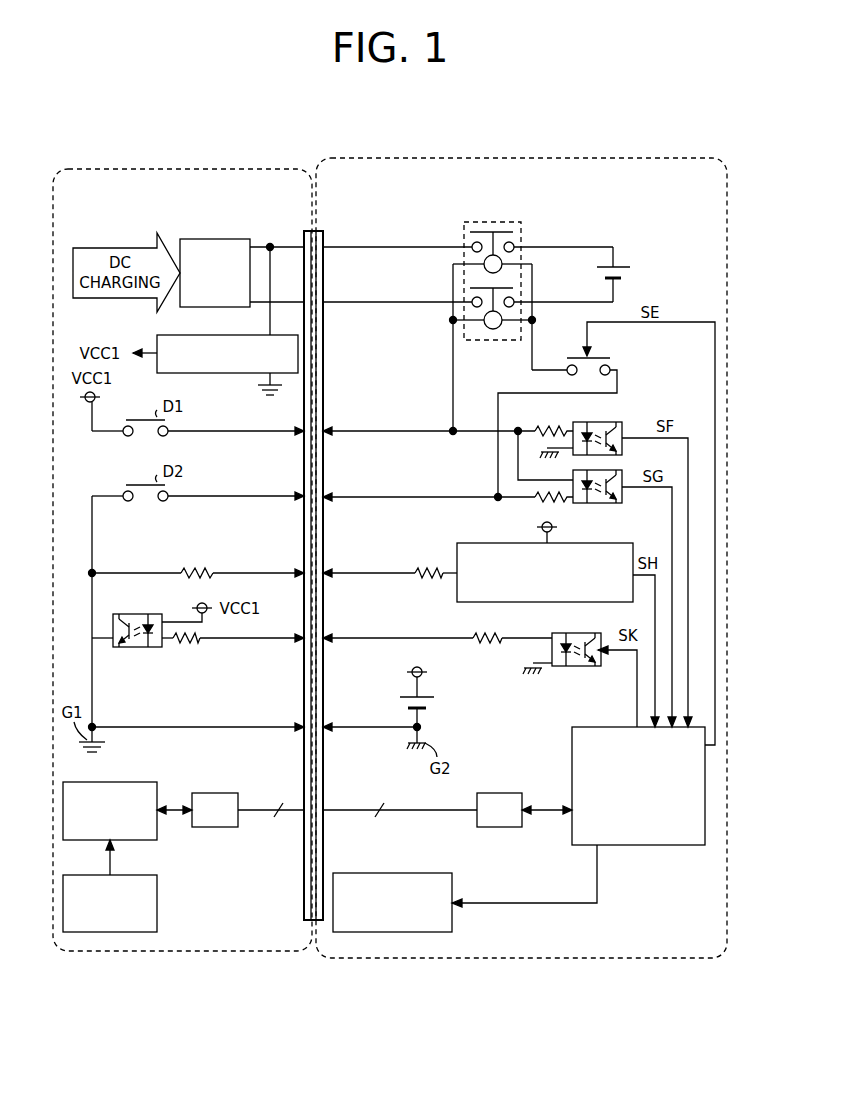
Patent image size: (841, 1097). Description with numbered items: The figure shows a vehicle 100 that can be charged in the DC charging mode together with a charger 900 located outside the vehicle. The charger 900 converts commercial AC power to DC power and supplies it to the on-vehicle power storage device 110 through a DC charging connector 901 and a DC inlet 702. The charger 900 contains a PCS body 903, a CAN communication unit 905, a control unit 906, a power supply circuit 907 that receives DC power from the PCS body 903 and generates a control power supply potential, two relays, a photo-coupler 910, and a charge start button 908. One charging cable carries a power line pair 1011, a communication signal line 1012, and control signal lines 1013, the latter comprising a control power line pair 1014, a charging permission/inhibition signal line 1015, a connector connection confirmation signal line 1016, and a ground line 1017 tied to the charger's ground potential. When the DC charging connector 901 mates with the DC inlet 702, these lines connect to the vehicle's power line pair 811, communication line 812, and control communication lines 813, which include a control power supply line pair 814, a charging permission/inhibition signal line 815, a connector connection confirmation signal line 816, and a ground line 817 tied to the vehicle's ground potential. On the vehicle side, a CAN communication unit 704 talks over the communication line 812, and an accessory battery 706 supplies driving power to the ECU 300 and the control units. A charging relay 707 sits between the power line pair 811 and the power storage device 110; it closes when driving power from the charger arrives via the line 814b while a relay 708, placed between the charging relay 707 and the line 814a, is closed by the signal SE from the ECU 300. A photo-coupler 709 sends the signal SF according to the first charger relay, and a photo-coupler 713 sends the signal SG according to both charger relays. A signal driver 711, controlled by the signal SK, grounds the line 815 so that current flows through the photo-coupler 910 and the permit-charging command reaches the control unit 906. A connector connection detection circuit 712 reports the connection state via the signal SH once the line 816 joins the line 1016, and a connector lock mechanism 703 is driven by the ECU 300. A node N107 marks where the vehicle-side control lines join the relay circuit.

The vehicle 100 is at (516, 160).
The charger 900 is at (192, 171).
The power storage device 110 is at (624, 268).
The ECU 300 is at (599, 727).
The DC inlet 702 is at (318, 230).
The connector lock mechanism 703 is at (383, 873).
The CAN communication unit 704 is at (504, 793).
The accessory battery 706 is at (432, 704).
The charging relay 707 is at (503, 222).
The relay 708 is at (599, 357).
The photo-coupler 709 is at (617, 422).
The signal driver 711 is at (569, 633).
The connector connection detection circuit 712 is at (504, 543).
The photo-coupler 713 is at (620, 506).
The power line pair 811 is at (372, 306).
The communication line 812 is at (445, 810).
The control communication lines 813 is at (340, 726).
The control power supply line pair 814 is at (381, 505).
The line 814a is at (419, 497).
The line 814b is at (416, 431).
The charging permission/inhibition signal line 815 is at (383, 638).
The connector connection confirmation signal line 816 is at (382, 573).
The ground line 817 is at (371, 727).
The DC charging connector 901 is at (304, 230).
The PCS body 903 is at (208, 239).
The CAN communication unit 905 is at (215, 793).
The control unit 906 is at (108, 782).
The power supply circuit 907 is at (245, 335).
The charge start button 908 is at (157, 903).
The photo-coupler 910 is at (138, 650).
The power line pair 1011 is at (282, 271).
The communication signal line 1012 is at (256, 810).
The control signal lines 1013 is at (270, 418).
The control power line pair 1014 is at (221, 506).
The charging permission/inhibition signal line 1015 is at (249, 638).
The connector connection confirmation signal line 1016 is at (243, 573).
The ground line 1017 is at (157, 727).
The node N107 is at (451, 425).